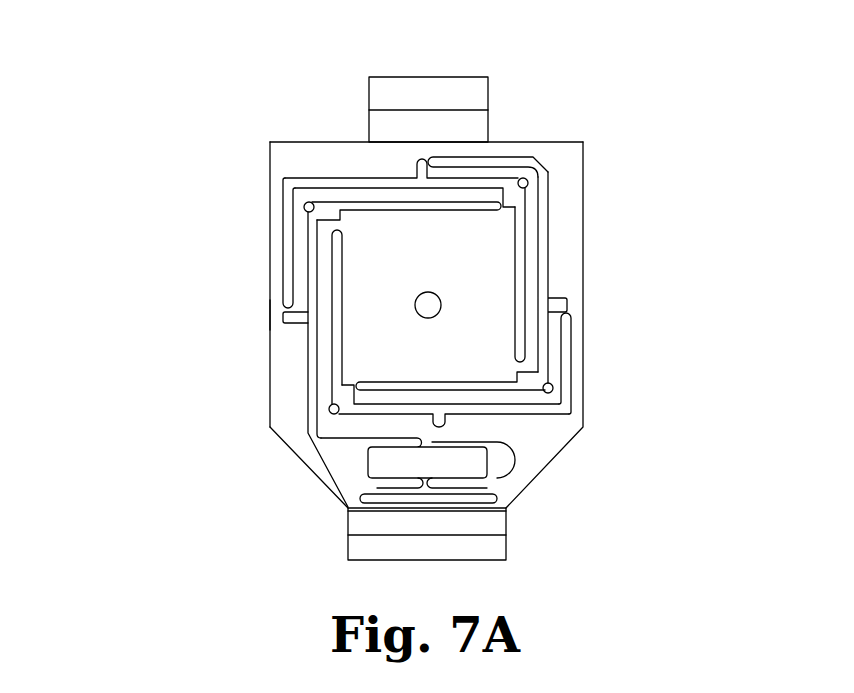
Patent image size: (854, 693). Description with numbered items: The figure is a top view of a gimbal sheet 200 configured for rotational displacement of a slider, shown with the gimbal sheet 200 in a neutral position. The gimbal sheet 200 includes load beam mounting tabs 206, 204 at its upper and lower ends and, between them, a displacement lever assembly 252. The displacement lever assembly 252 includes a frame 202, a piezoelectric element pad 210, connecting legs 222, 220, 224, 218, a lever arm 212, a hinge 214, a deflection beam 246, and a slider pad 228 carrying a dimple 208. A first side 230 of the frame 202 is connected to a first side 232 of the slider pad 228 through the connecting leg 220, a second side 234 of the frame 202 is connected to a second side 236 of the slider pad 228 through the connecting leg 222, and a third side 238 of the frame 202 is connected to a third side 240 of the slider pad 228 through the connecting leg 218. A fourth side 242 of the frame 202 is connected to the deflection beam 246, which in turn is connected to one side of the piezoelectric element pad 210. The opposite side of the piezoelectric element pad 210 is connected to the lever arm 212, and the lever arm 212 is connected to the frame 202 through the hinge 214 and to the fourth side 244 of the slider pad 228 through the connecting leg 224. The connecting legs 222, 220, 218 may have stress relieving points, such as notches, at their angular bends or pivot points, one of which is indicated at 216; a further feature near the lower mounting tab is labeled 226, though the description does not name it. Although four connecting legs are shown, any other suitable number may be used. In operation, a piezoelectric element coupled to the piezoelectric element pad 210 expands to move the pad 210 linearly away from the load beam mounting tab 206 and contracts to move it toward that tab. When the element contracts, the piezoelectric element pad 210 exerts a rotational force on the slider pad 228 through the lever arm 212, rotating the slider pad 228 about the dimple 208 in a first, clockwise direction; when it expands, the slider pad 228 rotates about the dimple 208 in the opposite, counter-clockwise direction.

The gimbal sheet 200 is at (431, 60).
The frame 202 is at (600, 228).
The load beam mounting tab 204 is at (495, 545).
The load beam mounting tab 206 is at (385, 93).
The dimple 208 is at (415, 302).
The piezoelectric element pad 210 is at (395, 459).
The lever arm 212 is at (327, 423).
The hinge 214 is at (497, 428).
The stress relieving point 216 is at (538, 156).
The connecting leg 218 is at (302, 228).
The connecting leg 220 is at (568, 306).
The connecting leg 222 is at (533, 208).
The connecting leg 224 is at (322, 326).
The lower feed trace 226 is at (378, 487).
The slider pad 228 is at (492, 318).
The first side of frame 230 is at (553, 330).
The first side of slider pad 232 is at (492, 386).
The second side of frame 234 is at (566, 142).
The second side of slider pad 236 is at (517, 258).
The third side of frame 238 is at (268, 288).
The third side of slider pad 240 is at (388, 207).
The fourth side of frame 242 is at (373, 512).
The fourth side of slider pad 244 is at (322, 310).
The deflection beam 246 is at (428, 492).
The displacement lever assembly 252 is at (166, 215).